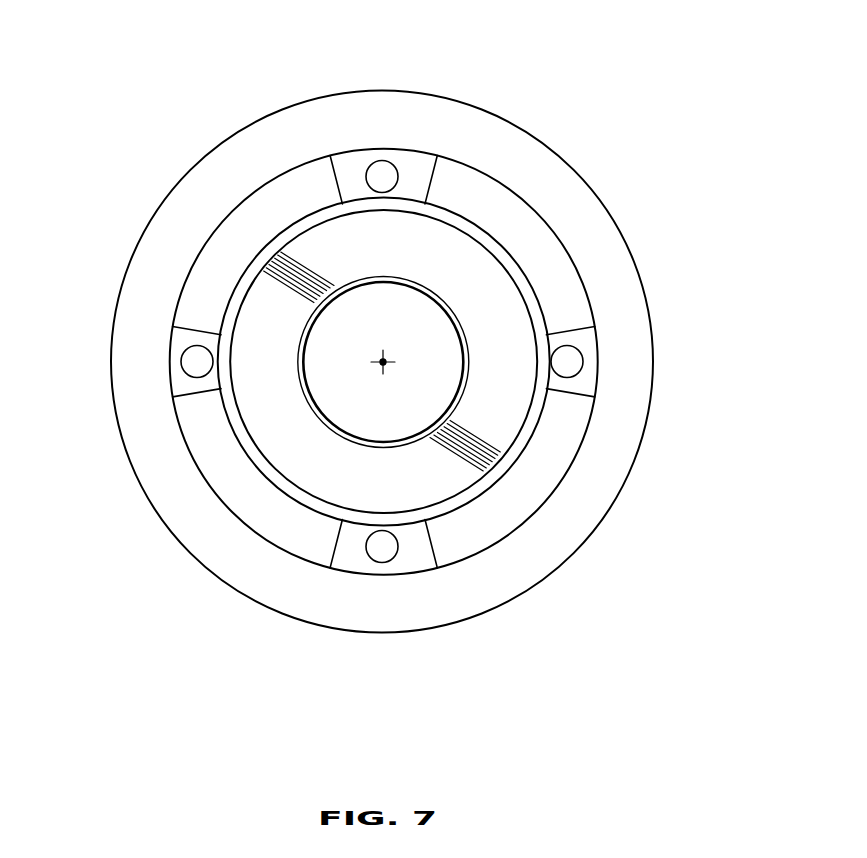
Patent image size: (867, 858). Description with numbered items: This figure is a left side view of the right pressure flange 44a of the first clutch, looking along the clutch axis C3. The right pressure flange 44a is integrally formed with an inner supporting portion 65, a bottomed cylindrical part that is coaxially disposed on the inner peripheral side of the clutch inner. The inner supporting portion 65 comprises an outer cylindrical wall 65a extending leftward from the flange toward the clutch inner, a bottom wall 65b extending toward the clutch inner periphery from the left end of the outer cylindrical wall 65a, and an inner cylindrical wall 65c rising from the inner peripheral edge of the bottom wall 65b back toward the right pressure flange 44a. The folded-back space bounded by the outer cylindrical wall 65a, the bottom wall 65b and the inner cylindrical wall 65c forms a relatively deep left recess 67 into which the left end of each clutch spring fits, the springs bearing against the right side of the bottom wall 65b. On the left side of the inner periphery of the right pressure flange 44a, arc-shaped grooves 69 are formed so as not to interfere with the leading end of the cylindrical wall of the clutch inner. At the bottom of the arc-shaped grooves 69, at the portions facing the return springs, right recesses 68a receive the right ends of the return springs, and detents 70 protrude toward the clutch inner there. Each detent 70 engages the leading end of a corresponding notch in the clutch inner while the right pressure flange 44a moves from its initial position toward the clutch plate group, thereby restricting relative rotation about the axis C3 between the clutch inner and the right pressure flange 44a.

The right pressure flange 44a is at (483, 104).
The arc-shaped grooves 69 is at (246, 218).
The detents 70 is at (348, 163).
The right recesses 68a is at (400, 178).
The inner supporting portion 65 is at (521, 265).
The outer cylindrical wall 65a is at (490, 243).
The bottom wall 65b is at (450, 258).
The inner cylindrical wall 65c is at (414, 292).
The left recess 67 is at (280, 440).
The axis C3 is at (383, 366).